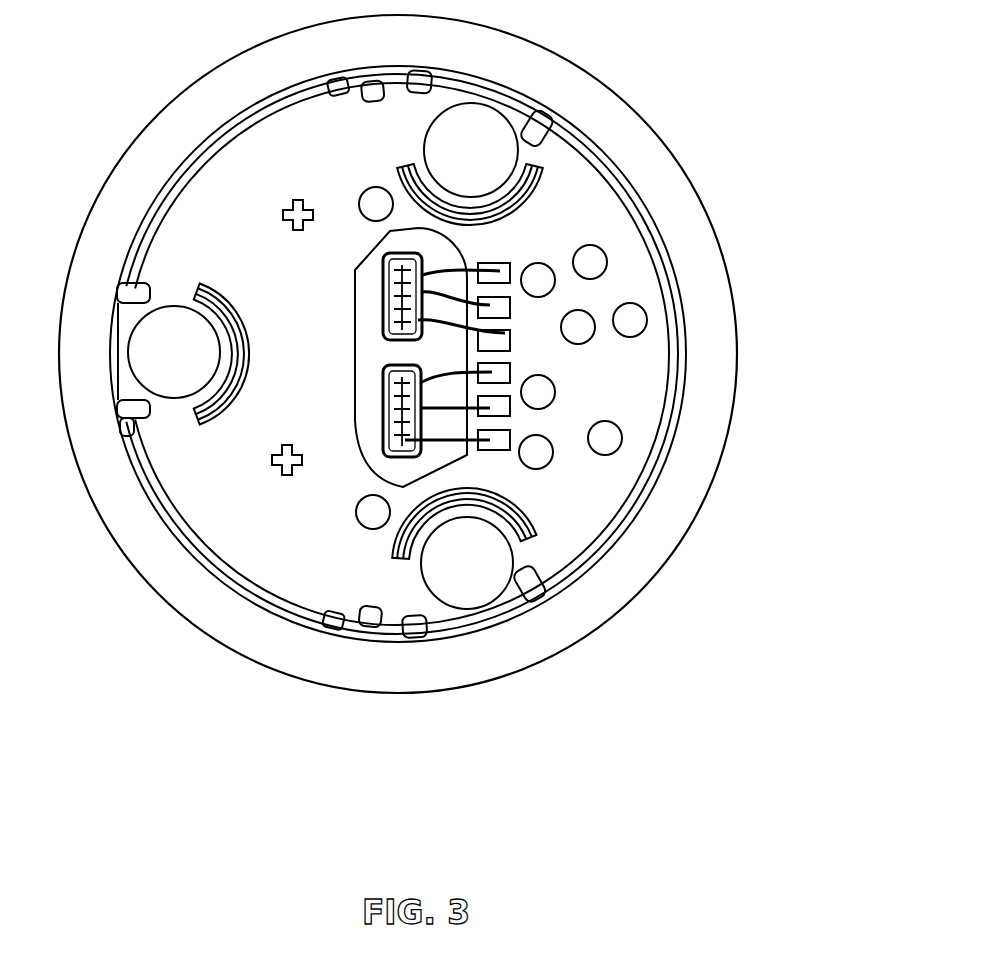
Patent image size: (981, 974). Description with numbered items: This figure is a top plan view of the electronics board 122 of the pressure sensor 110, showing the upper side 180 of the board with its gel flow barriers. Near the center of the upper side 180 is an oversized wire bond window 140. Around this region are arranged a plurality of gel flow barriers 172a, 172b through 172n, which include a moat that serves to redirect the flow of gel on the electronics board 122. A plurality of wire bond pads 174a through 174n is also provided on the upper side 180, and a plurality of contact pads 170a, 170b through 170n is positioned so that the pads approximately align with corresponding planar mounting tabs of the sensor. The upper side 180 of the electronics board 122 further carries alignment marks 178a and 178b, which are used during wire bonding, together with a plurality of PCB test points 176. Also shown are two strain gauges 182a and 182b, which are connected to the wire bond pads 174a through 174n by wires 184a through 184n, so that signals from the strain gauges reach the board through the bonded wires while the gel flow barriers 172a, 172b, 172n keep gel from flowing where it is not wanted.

The housing 110 is at (130, 532).
The electronics board 122 is at (547, 160).
The oversized wire bond window 140 is at (365, 442).
The contact pad 170a is at (204, 369).
The contact pad 170b is at (498, 166).
The contact pad 170n is at (492, 577).
The gel flow barrier 172a is at (140, 285).
The gel flow barrier 172b is at (570, 190).
The gel flow barrier 172n is at (536, 545).
The wire bond pad 174a is at (512, 440).
The wire bond pad 174n is at (510, 262).
The PCB test points 176 is at (557, 381).
The alignment mark 178a is at (288, 473).
The alignment mark 178b is at (305, 203).
The upper side 180 is at (230, 180).
The strain gauge 182a is at (380, 400).
The strain gauge 182b is at (380, 270).
The wire 184a is at (478, 450).
The wire 184n is at (488, 293).